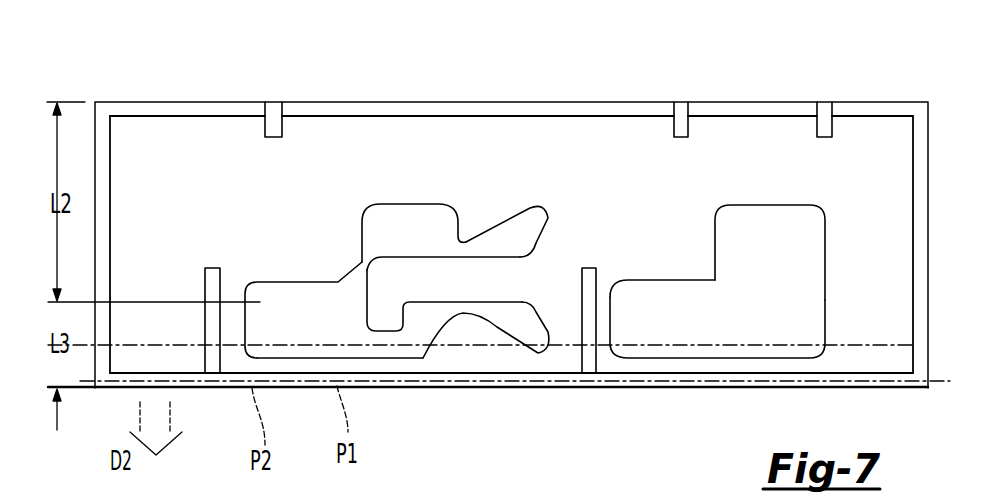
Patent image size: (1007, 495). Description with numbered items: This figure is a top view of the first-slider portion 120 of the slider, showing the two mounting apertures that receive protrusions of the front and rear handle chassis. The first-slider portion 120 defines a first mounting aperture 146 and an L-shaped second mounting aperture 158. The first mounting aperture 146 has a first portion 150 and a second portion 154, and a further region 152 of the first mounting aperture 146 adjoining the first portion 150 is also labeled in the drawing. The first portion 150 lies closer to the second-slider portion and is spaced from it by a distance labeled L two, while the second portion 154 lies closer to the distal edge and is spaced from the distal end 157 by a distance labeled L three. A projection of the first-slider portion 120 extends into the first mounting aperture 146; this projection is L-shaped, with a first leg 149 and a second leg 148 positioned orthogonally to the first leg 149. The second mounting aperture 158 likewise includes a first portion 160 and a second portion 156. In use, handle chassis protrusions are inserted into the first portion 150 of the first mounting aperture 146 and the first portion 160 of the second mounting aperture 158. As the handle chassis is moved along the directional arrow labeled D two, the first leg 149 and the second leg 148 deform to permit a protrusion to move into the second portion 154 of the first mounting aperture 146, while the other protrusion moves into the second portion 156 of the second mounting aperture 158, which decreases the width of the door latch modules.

The first-slider portion 120 is at (617, 150).
The first mounting aperture 146 is at (273, 298).
The second leg 148 is at (365, 293).
The first leg 149 is at (487, 283).
The first portion of the first mounting aperture 150 is at (410, 227).
The arm portion 152 is at (473, 230).
The second portion of the first mounting aperture 154 is at (345, 333).
The second portion of the second mounting aperture 156 is at (672, 291).
The distal end 157 is at (892, 388).
The second mounting aperture 158 is at (708, 313).
The first portion of the second mounting aperture 160 is at (770, 232).